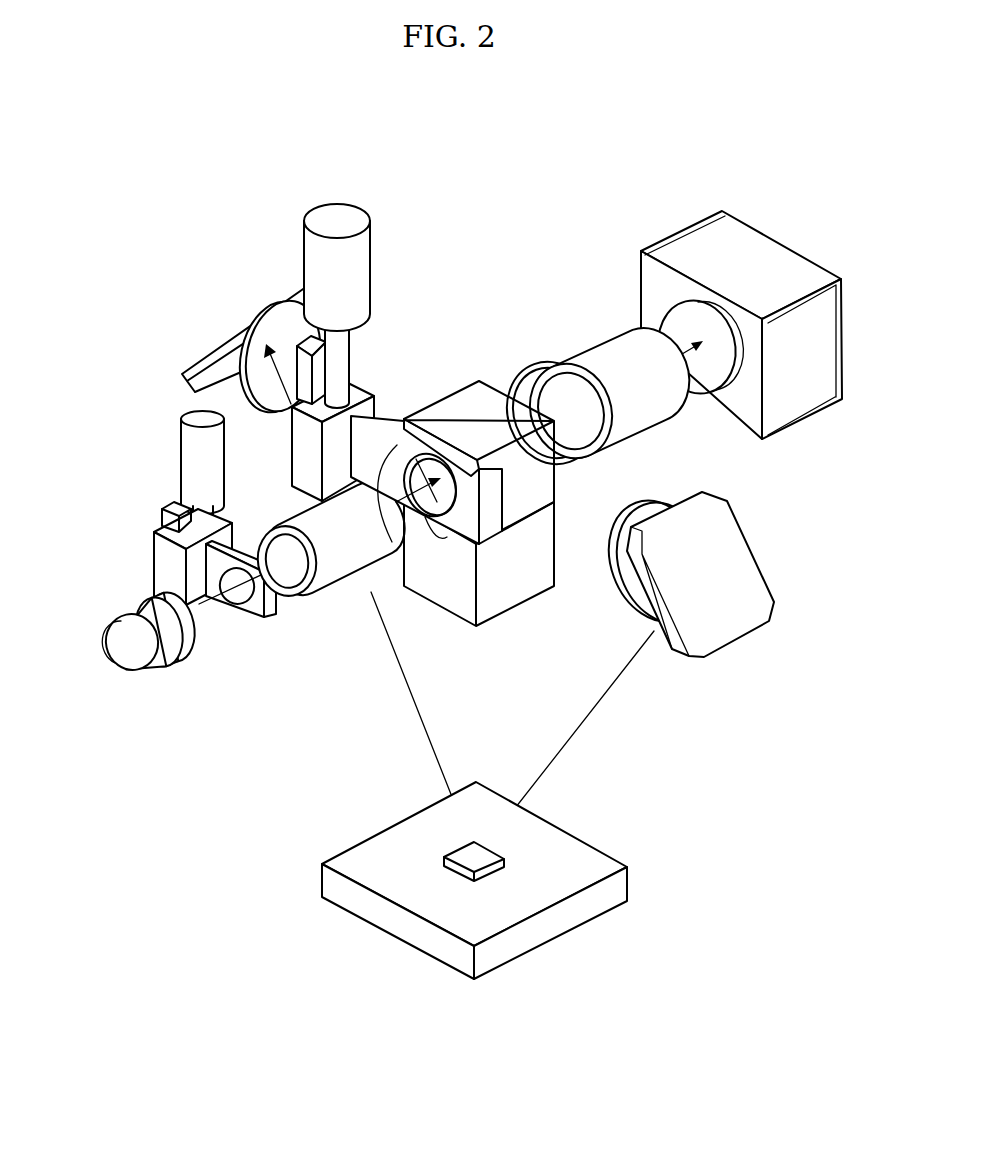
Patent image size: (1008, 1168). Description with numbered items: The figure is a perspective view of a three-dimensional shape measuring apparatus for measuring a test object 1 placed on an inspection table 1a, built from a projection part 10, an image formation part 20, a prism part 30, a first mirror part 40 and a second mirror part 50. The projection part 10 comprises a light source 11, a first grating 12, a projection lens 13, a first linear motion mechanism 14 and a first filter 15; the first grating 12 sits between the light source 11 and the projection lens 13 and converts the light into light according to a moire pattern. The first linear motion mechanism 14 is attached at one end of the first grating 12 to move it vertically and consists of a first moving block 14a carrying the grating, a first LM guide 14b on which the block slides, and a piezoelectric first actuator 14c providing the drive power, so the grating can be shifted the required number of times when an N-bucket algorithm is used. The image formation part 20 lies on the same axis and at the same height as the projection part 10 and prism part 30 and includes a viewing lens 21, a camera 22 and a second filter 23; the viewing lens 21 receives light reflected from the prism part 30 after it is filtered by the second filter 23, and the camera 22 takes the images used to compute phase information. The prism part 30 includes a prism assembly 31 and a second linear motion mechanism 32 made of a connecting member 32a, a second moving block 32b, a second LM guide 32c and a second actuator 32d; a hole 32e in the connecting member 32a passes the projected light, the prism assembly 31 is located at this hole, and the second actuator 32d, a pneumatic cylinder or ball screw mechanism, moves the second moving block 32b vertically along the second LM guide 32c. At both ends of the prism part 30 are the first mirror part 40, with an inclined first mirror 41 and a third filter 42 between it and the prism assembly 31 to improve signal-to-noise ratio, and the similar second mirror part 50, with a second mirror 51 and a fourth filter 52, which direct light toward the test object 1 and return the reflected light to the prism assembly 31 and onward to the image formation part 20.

The test object 1 is at (507, 867).
The inspection table 1a is at (625, 884).
The projection part 10 is at (226, 580).
The light source 11 is at (151, 661).
The first grating 12 is at (252, 620).
The projection lens 13 is at (291, 599).
The first linear motion mechanism 14 is at (140, 561).
The first moving block 14a is at (155, 560).
The first LM guide 14b is at (163, 512).
The first actuator 14c is at (182, 455).
The first filter 15 is at (370, 590).
The image formation part 20 is at (667, 296).
The viewing lens 21 is at (582, 345).
The camera 22 is at (693, 240).
The second filter 23 is at (548, 343).
The prism part 30 is at (433, 421).
The prism assembly 31 is at (480, 370).
The second linear motion mechanism 32 is at (433, 421).
The connecting member 32a is at (400, 413).
The second moving block 32b is at (345, 393).
The second LM guide 32c is at (350, 338).
The second actuator 32d is at (368, 222).
The hole 32e is at (462, 508).
The first mirror part 40 is at (729, 559).
The first mirror 41 is at (716, 574).
The third filter 42 is at (657, 492).
The second mirror part 50 is at (231, 323).
The second mirror 51 is at (207, 353).
The fourth filter 52 is at (267, 339).